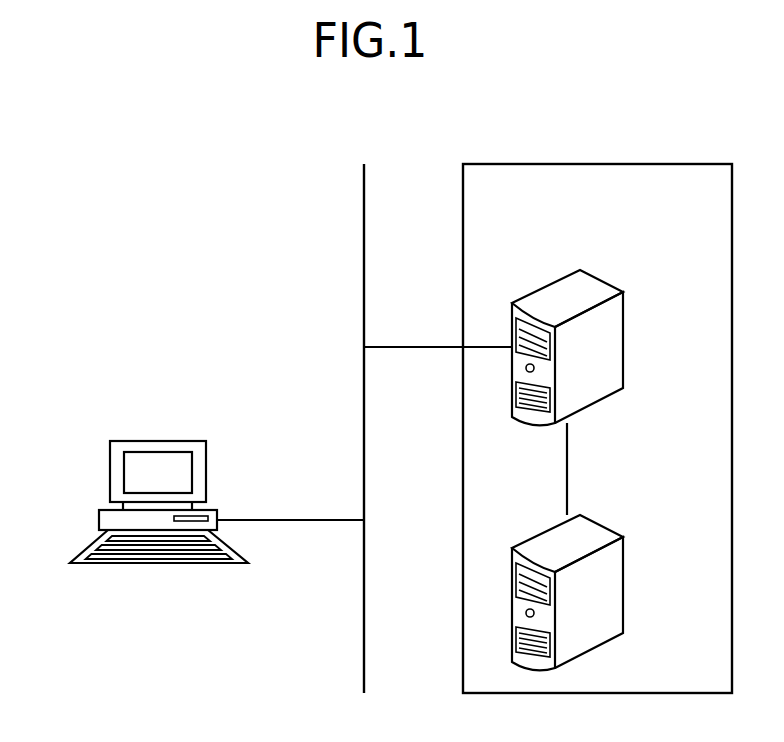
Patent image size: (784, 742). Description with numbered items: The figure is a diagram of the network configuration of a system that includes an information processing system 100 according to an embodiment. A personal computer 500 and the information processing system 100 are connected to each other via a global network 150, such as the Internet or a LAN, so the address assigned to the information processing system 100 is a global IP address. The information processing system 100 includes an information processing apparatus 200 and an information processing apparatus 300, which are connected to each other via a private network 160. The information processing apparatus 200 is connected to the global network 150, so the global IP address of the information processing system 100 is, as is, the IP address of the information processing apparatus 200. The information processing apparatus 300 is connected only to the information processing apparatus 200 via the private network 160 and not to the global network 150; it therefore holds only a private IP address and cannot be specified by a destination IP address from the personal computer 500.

The information processing system 100 is at (643, 164).
The global network 150 is at (410, 345).
The private network 160 is at (567, 462).
The information processing apparatus 200 is at (623, 345).
The information processing apparatus 300 is at (623, 587).
The personal computer 500 is at (110, 470).